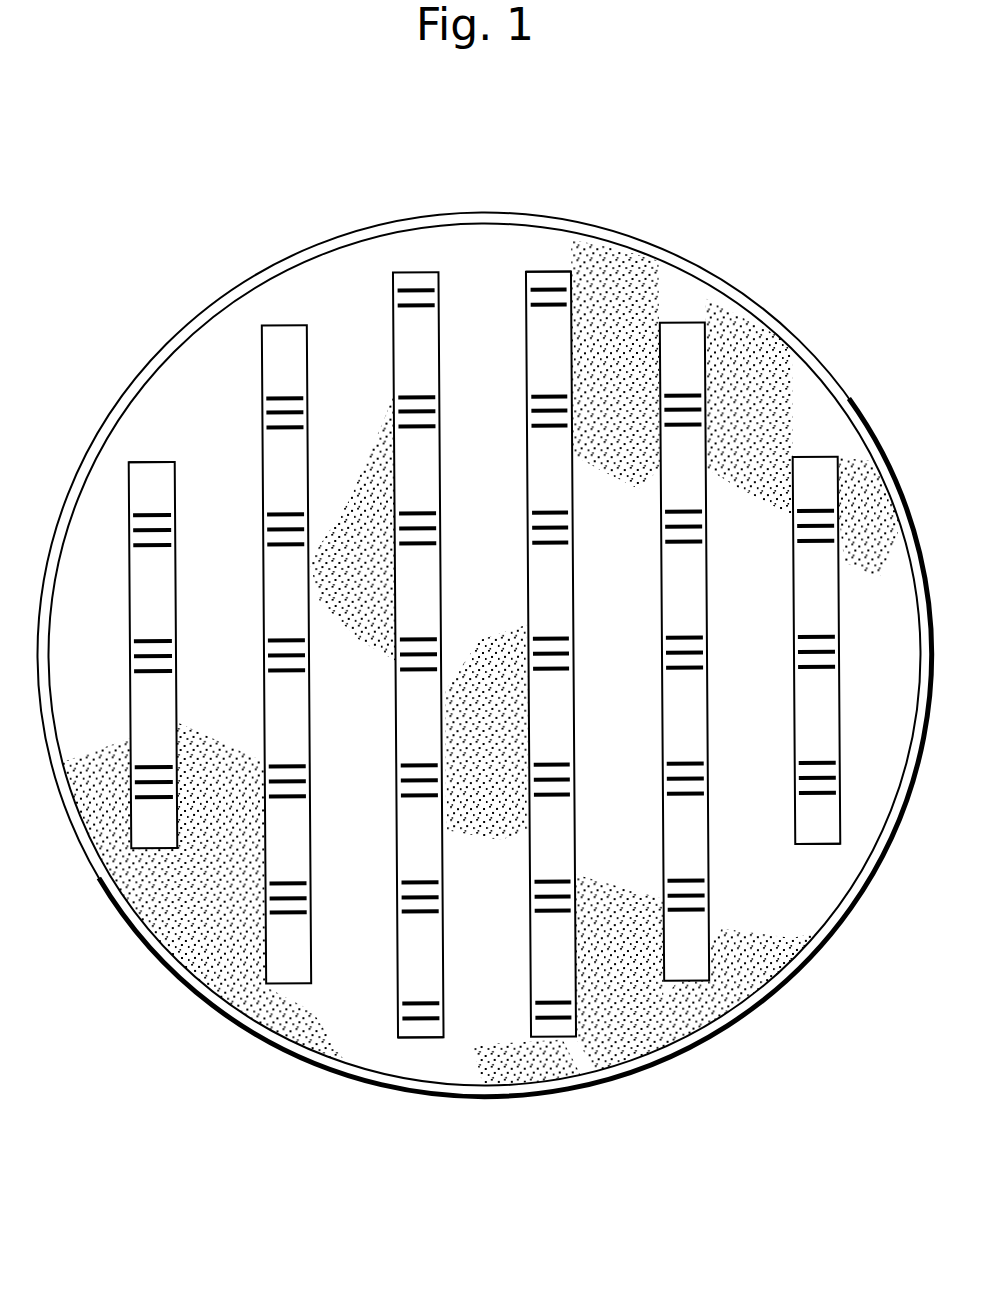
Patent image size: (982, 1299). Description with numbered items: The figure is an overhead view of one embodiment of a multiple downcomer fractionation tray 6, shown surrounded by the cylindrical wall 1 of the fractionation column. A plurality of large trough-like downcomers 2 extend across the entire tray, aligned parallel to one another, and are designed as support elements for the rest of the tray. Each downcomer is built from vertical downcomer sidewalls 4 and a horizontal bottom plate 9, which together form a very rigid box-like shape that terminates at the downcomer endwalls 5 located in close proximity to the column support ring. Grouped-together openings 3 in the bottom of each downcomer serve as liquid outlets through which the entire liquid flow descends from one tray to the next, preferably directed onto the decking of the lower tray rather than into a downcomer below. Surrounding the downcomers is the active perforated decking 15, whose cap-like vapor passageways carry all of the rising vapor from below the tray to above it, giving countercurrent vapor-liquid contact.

The cylindrical wall 1 is at (243, 272).
The downcomers 2 is at (522, 455).
The openings 3 is at (264, 427).
The downcomer sidewalls 4 is at (130, 691).
The downcomer endwalls 5 is at (553, 271).
The multiple downcomer fractionation tray 6 is at (360, 290).
The bottom plate 9 is at (273, 492).
The perforated decking 15 is at (758, 395).